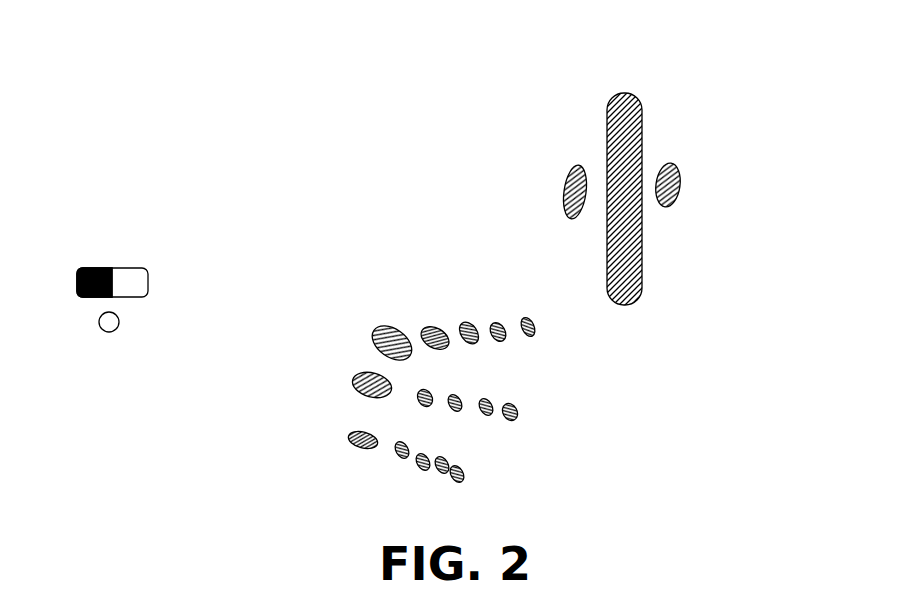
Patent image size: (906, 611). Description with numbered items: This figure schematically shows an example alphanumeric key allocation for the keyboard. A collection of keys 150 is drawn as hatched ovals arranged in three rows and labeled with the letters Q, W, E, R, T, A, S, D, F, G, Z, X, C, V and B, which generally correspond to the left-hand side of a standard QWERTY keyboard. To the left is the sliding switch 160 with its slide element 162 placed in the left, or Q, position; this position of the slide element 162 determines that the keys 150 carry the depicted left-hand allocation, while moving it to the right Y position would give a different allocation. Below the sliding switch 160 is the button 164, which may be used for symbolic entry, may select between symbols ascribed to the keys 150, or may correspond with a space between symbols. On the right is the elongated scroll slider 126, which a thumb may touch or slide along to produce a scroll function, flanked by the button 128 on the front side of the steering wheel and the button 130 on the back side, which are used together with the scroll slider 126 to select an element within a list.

The scroll slider 126 is at (640, 285).
The button 128 is at (563, 193).
The button 130 is at (680, 183).
The keys 150 is at (388, 327).
The sliding switch 160 is at (122, 258).
The slide element 162 is at (80, 297).
The button 164 is at (112, 332).